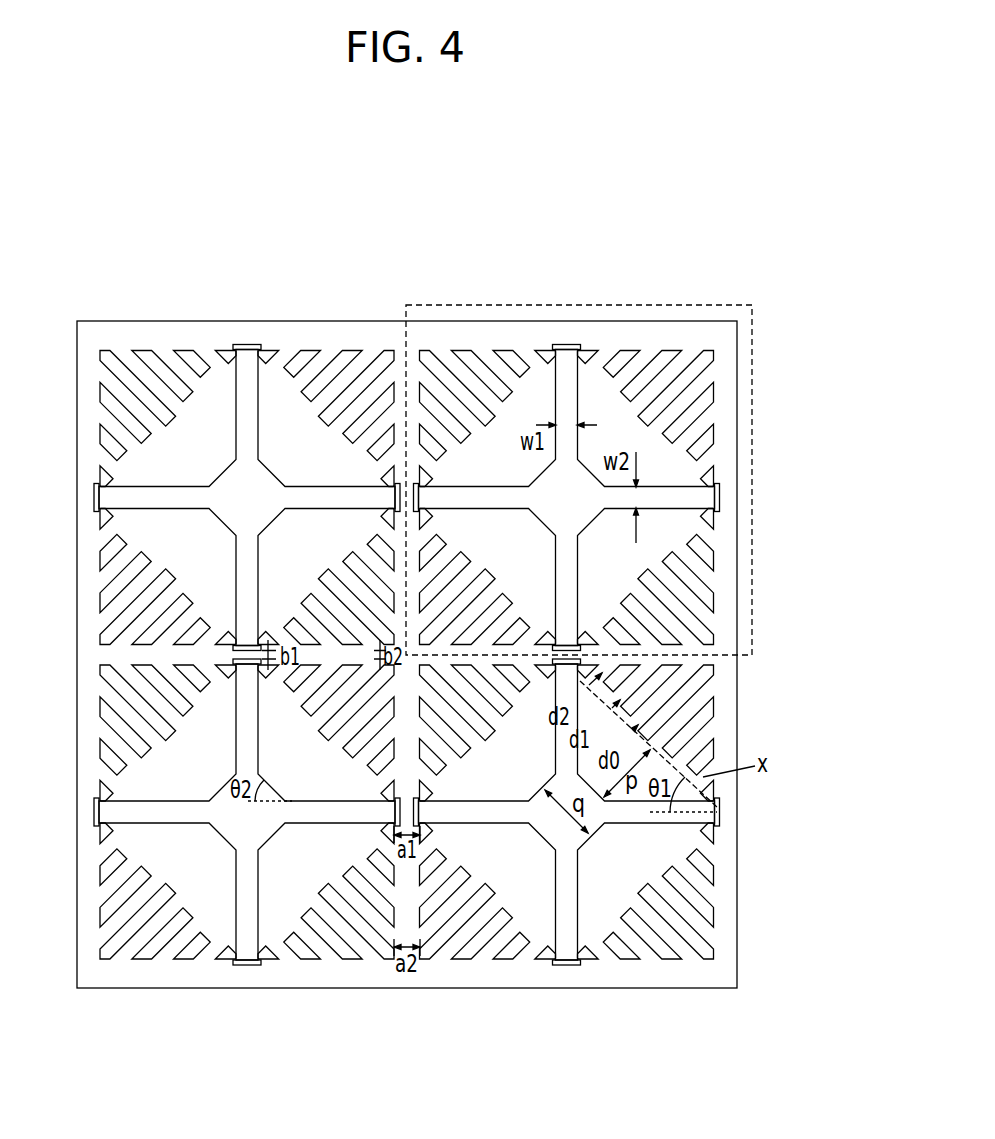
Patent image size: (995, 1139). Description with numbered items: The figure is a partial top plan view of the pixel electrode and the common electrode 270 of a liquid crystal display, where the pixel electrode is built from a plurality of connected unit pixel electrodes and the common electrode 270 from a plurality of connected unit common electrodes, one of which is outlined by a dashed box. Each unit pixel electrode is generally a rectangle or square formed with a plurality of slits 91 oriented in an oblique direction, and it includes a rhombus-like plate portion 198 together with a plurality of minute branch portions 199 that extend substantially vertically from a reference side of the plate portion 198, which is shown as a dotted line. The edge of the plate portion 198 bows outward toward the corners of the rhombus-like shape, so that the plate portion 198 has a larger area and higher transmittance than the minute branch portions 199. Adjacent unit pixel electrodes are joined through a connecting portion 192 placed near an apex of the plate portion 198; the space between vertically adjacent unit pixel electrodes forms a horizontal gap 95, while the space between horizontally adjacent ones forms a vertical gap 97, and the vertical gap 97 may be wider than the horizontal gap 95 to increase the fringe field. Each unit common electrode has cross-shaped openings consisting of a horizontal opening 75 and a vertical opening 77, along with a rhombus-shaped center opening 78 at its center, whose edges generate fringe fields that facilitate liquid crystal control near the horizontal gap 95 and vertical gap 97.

The slits 91 is at (146, 356).
The vertical opening 77 is at (243, 344).
The minute branch portions 199 is at (323, 396).
The center opening 78 is at (222, 470).
The plate portion 198 is at (135, 440).
The horizontal opening 75 is at (93, 498).
The horizontal gap 95 is at (127, 653).
The connecting portion 192 is at (232, 652).
The vertical gap 97 is at (424, 972).
The common electrode 270 is at (624, 309).